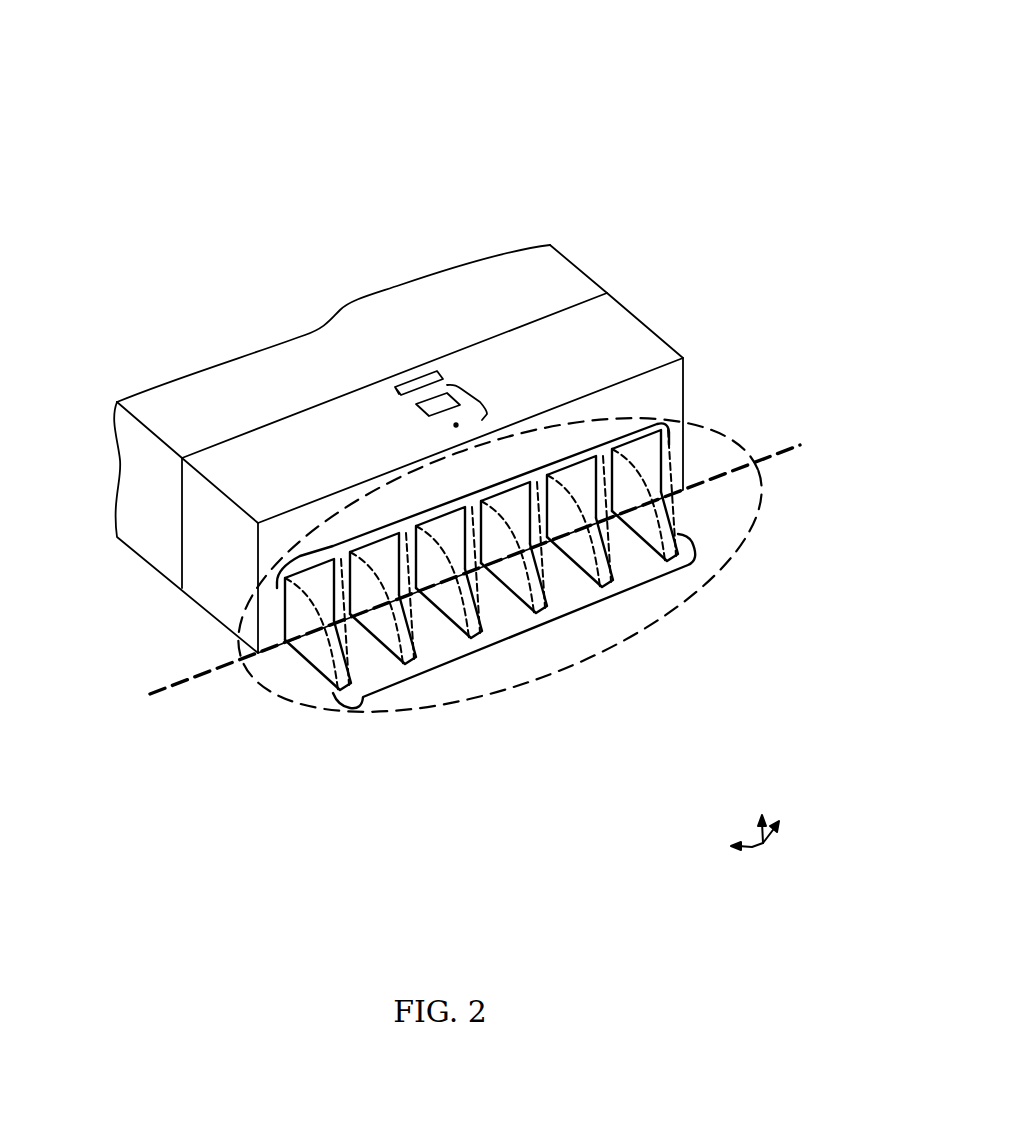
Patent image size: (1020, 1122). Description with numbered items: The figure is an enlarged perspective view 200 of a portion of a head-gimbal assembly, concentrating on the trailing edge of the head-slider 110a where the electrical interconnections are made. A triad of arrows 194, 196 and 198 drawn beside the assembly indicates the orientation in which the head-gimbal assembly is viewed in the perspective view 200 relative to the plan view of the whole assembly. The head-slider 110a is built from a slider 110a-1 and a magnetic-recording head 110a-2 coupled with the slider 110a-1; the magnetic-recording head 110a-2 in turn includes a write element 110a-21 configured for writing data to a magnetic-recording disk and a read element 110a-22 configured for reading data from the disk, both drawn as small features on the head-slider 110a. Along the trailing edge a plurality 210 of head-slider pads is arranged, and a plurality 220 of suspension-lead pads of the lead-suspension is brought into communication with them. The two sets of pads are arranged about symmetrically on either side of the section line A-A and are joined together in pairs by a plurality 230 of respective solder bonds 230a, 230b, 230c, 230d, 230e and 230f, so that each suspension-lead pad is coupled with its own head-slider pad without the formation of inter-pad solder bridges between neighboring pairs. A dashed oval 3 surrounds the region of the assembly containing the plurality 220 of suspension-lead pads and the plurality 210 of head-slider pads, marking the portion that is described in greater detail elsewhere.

The perspective view 200 is at (448, 464).
The head-slider 110a is at (443, 400).
The slider 110a-1 is at (552, 283).
The magnetic-recording head 110a-2 is at (618, 330).
The write element 110a-21 is at (472, 395).
The read element 110a-22 is at (417, 370).
The plurality of head-slider pads 210 is at (317, 547).
The plurality of suspension-lead pads 220 is at (358, 712).
The plurality of solder bonds 230 is at (581, 593).
The solder bond 230a is at (323, 640).
The solder bond 230b is at (388, 616).
The solder bond 230c is at (454, 591).
The solder bond 230d is at (519, 568).
The solder bond 230e is at (585, 546).
The solder bond 230f is at (741, 527).
The oval 3 is at (706, 428).
The arrow 194 is at (768, 834).
The arrow 196 is at (752, 848).
The arrow 198 is at (760, 838).